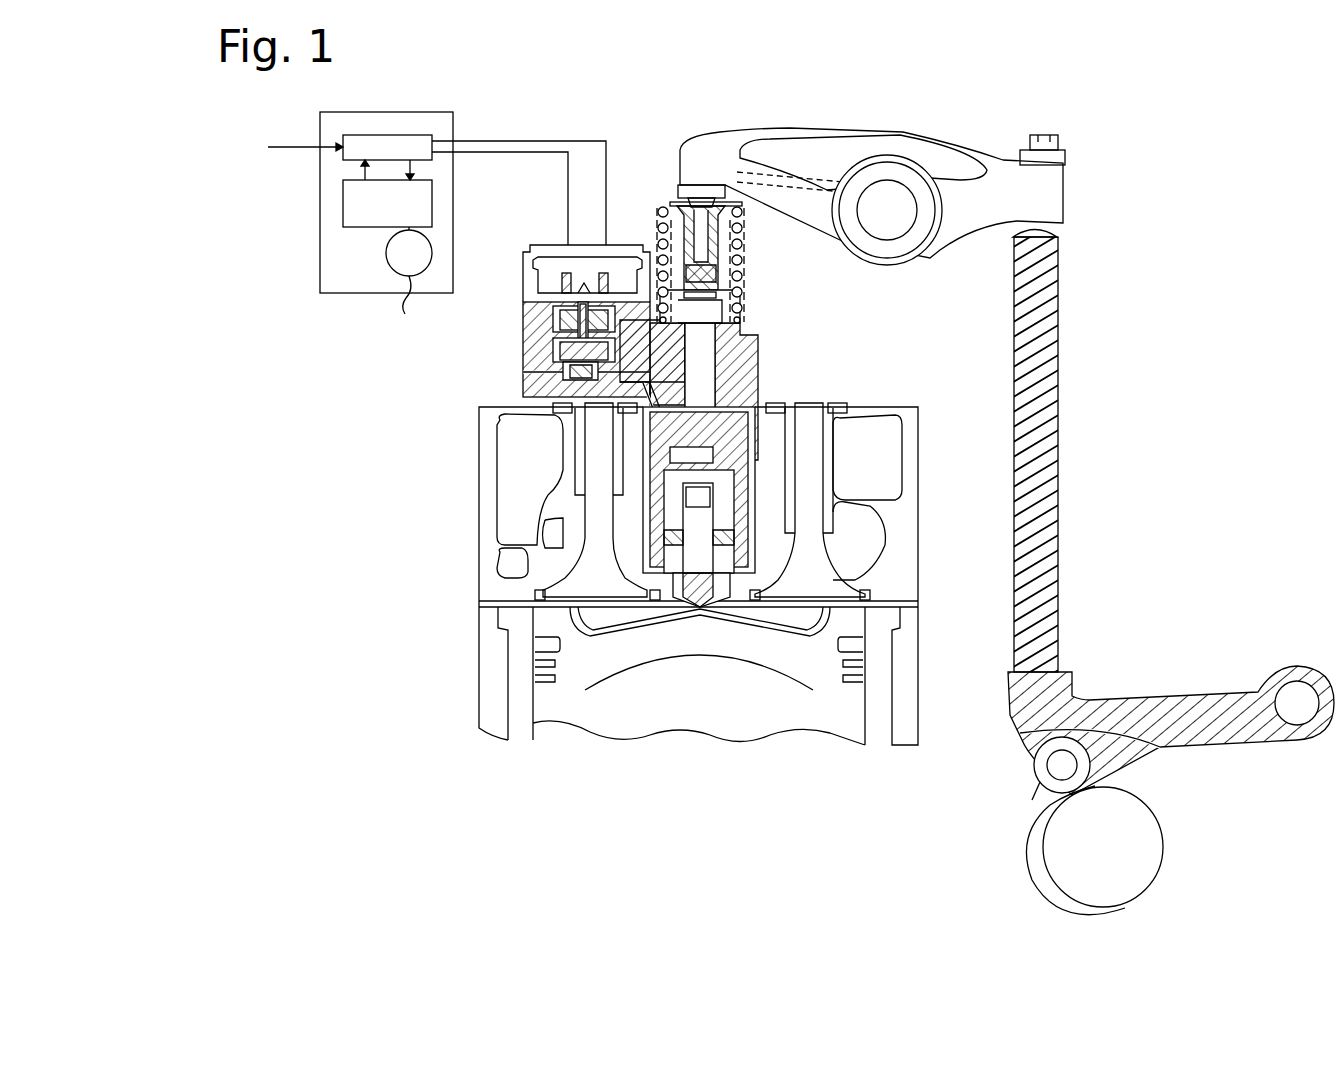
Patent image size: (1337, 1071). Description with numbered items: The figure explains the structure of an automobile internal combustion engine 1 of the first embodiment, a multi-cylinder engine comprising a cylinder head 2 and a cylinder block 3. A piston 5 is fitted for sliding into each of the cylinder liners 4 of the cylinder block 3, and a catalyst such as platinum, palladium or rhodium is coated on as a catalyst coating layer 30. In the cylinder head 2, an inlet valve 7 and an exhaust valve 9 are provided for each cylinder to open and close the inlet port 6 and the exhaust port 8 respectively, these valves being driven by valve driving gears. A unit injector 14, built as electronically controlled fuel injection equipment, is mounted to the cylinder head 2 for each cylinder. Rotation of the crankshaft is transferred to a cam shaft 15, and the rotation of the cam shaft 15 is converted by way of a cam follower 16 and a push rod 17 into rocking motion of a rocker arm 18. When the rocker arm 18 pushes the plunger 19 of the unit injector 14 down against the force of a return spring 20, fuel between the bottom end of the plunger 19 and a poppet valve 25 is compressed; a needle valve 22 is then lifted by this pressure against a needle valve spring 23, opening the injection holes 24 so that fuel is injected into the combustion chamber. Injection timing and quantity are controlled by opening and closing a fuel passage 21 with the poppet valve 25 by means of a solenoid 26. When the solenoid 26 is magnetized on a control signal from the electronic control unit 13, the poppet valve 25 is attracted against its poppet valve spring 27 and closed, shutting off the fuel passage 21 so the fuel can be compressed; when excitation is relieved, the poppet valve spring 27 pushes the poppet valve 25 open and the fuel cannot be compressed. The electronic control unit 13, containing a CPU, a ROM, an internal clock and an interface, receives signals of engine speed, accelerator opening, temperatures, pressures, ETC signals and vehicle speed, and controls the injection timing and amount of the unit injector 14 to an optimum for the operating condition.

The internal combustion engine 1 is at (472, 478).
The cylinder head 2 is at (484, 497).
The cylinder block 3 is at (487, 653).
The cylinder liner 4 is at (883, 655).
The piston 5 is at (642, 652).
The inlet port 6 is at (548, 539).
The inlet valve 7 is at (560, 560).
The exhaust port 8 is at (877, 518).
The exhaust valve 9 is at (810, 547).
The electronic control unit 13 is at (345, 293).
The unit injector 14 is at (766, 375).
The cam shaft 15 is at (1043, 876).
The cam follower 16 is at (1085, 768).
The push rod 17 is at (1062, 413).
The rocker arm 18 is at (872, 132).
The plunger 19 is at (705, 357).
The return spring 20 is at (742, 242).
The fuel passage 21 is at (648, 425).
The needle valve 22 is at (820, 572).
The needle valve spring 23 is at (770, 505).
The injection holes 24 is at (700, 610).
The poppet valve 25 is at (572, 390).
The solenoid 26 is at (567, 274).
The poppet valve spring 27 is at (553, 322).
The catalyst coating layer 30 is at (765, 612).